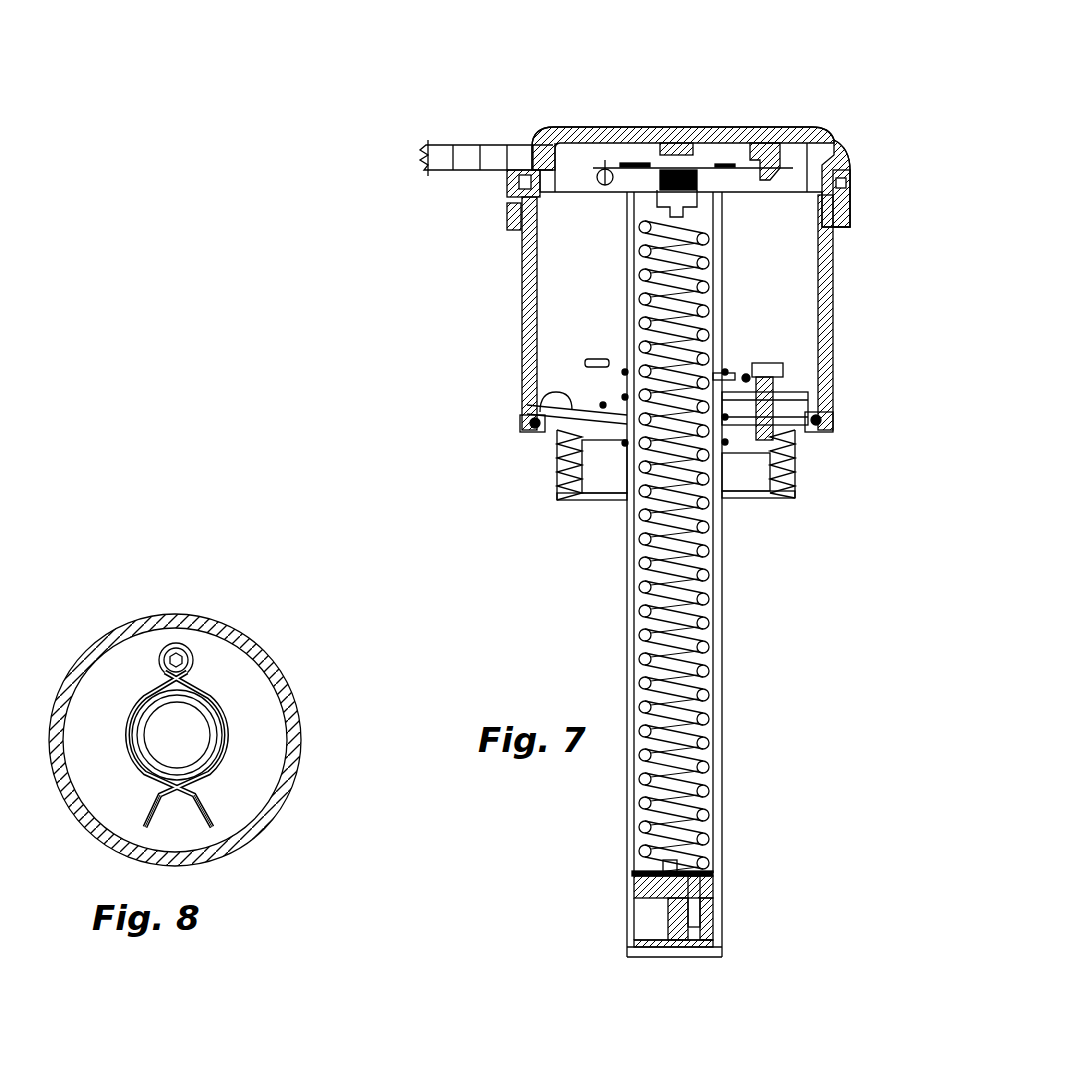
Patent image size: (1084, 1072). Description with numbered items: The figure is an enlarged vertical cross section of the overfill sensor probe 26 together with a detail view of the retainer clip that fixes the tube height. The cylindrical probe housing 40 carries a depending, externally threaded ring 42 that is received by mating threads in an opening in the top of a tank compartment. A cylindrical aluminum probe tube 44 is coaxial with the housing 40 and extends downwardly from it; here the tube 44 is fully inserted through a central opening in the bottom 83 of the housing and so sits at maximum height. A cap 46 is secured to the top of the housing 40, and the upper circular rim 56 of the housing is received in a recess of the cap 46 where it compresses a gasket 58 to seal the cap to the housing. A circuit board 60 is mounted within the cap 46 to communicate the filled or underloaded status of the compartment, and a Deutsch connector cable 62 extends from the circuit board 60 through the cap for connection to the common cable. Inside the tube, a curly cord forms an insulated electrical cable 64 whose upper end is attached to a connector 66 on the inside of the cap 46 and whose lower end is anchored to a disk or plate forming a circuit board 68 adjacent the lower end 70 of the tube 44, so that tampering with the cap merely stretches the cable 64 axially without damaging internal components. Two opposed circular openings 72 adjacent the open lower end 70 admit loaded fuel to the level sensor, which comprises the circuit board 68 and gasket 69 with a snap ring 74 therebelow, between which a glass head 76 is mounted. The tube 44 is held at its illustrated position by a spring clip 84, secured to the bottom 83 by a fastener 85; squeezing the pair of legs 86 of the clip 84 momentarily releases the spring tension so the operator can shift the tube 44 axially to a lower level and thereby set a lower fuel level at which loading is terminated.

In FIG. 7, the overfill sensor probe 26 is at (476, 325).
In FIG. 7, the probe housing 40 is at (520, 277).
In FIG. 7, the externally threaded ring 42 is at (557, 490).
In FIG. 7, the probe tube 44 is at (722, 665).
In FIG. 8, the probe tube 44 is at (212, 730).
In FIG. 7, the cap 46 is at (663, 127).
In FIG. 7, the upper circular rim 56 is at (850, 165).
In FIG. 7, the gasket 58 is at (513, 188).
In FIG. 7, the circuit board 60 is at (737, 127).
In FIG. 7, the Deutsch connector cable 62 is at (440, 145).
In FIG. 7, the insulated electrical cable 64 is at (722, 577).
In FIG. 7, the connector 66 is at (700, 185).
In FIG. 7, the circuit board 68 is at (697, 872).
In FIG. 7, the gasket 69 is at (632, 882).
In FIG. 7, the lower end 70 is at (697, 960).
In FIG. 7, the circular openings 72 is at (712, 897).
In FIG. 7, the snap ring 74 is at (645, 953).
In FIG. 7, the glass head 76 is at (710, 933).
In FIG. 7, the bottom 83 is at (527, 398).
In FIG. 8, the bottom 83 is at (267, 717).
In FIG. 7, the spring clip 84 is at (736, 372).
In FIG. 8, the spring clip 84 is at (193, 688).
In FIG. 7, the fastener 85 is at (768, 363).
In FIG. 8, the fastener 85 is at (193, 650).
In FIG. 8, the legs 86 is at (197, 823).